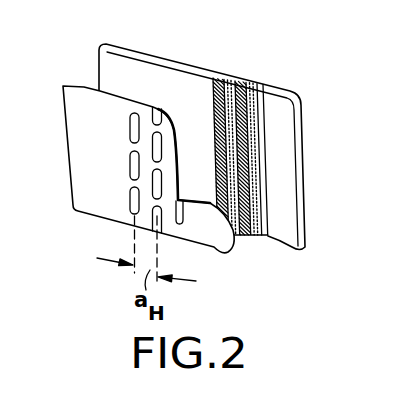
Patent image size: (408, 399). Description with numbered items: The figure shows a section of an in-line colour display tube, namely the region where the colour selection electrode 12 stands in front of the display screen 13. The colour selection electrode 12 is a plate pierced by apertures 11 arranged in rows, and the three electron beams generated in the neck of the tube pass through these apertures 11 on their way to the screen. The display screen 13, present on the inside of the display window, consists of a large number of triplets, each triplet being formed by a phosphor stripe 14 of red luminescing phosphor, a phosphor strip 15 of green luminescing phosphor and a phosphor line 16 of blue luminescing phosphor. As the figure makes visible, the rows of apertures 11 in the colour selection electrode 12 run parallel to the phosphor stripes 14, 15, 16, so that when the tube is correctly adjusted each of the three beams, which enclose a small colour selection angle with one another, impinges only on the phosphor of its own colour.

The apertures 11 is at (130, 165).
The colour selection electrode 12 is at (85, 98).
The display screen 13 is at (288, 190).
The phosphor stripes of red luminescing phosphor 14 is at (213, 79).
The phosphor strips of green luminescing phosphor 15 is at (232, 79).
The phosphor lines of blue luminescing phosphor 16 is at (238, 78).